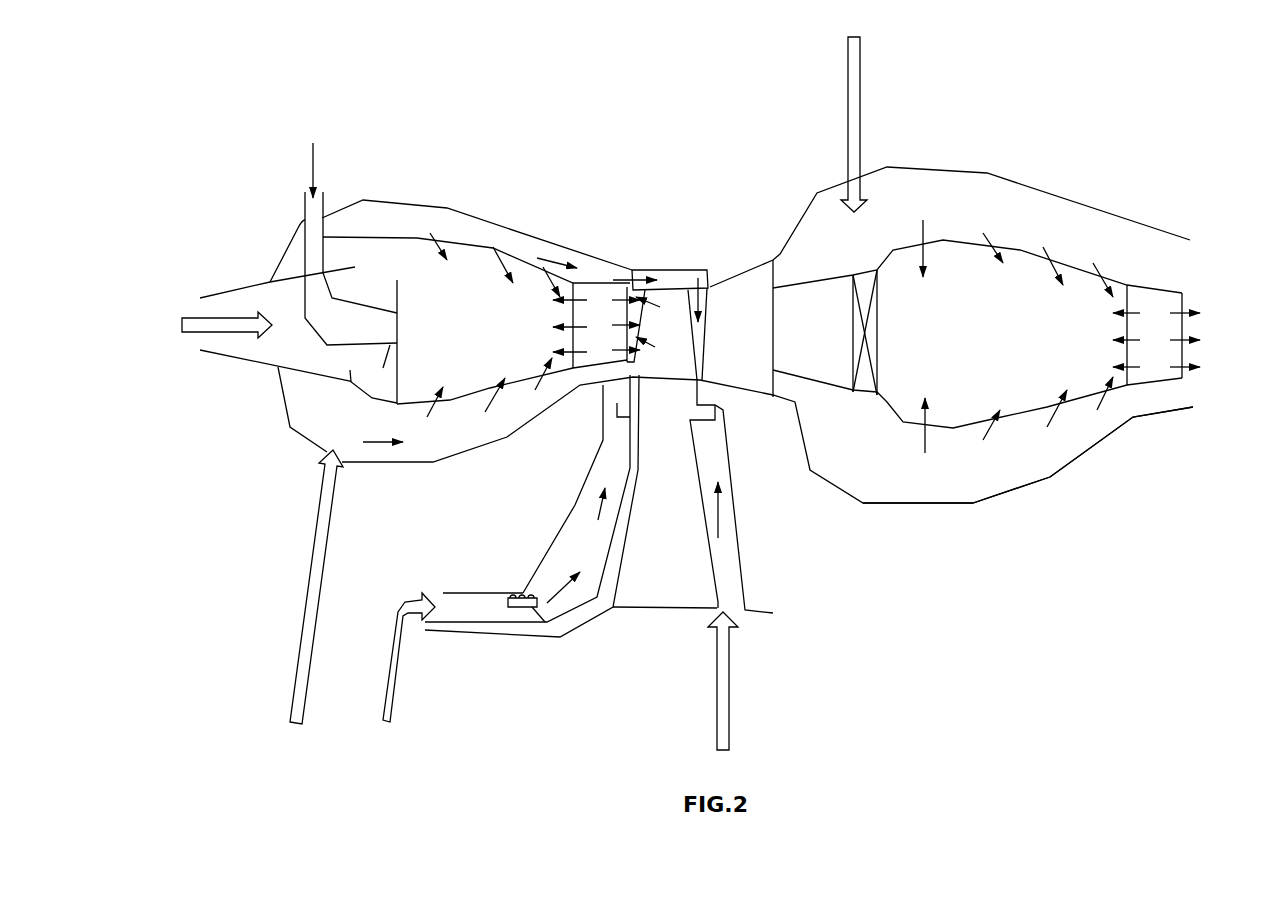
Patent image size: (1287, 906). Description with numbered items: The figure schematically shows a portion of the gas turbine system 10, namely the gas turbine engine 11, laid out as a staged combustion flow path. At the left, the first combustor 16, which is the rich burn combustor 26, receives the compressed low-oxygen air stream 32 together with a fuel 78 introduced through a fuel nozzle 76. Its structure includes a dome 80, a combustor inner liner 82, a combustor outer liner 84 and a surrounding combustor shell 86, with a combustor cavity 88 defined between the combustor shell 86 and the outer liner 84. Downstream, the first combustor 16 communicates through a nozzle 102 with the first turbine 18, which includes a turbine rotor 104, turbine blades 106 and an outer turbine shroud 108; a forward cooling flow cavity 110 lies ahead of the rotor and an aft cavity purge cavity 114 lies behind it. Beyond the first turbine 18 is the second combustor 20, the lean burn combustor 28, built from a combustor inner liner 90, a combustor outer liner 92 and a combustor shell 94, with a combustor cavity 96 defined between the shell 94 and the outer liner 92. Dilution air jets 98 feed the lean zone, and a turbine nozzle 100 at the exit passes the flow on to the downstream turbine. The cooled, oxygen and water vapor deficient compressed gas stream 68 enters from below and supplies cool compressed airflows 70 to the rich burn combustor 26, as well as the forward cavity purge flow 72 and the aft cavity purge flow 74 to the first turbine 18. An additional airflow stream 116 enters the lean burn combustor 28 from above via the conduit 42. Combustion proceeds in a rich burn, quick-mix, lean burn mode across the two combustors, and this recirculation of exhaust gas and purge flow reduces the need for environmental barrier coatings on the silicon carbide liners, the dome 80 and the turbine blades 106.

The gas turbine system 10 is at (306, 84).
The gas turbine engine 11 is at (255, 185).
The first combustor 16 is at (543, 203).
The first turbine 18 is at (725, 185).
The second combustor 20 is at (1027, 148).
The rich burn combustor 26 is at (441, 207).
The lean burn combustor 28 is at (940, 503).
The low-oxygen air stream 32 is at (190, 318).
The conduit 42 is at (515, 598).
The cooled and compressed gas stream 68 is at (327, 540).
The cool compressed airflows 70 is at (377, 443).
The forward cavity purge flow 72 is at (592, 500).
The aft cavity purge flow 74 is at (722, 520).
The fuel nozzle 76 is at (352, 280).
The fuel 78 is at (322, 158).
The dome 80 is at (402, 368).
The combustor inner liner 82 is at (470, 398).
The combustor outer liner 84 is at (525, 265).
The combustor shell 86 is at (470, 456).
The combustor cavity 88 is at (314, 440).
The combustor inner liner 90 is at (955, 428).
The combustor outer liner 92 is at (1024, 250).
The combustor shell 94 is at (1072, 462).
The combustor cavity 96 is at (1022, 465).
The dilution air jets 98 is at (922, 445).
The turbine nozzle 100 is at (1172, 298).
The nozzle 102 is at (607, 283).
The turbine rotor 104 is at (648, 608).
The turbine blades 106 is at (666, 295).
The outer turbine shroud 108 is at (706, 288).
The forward cooling flow cavity 110 is at (612, 453).
The aft cavity purge cavity 114 is at (752, 563).
The additional airflow stream 116 is at (862, 82).